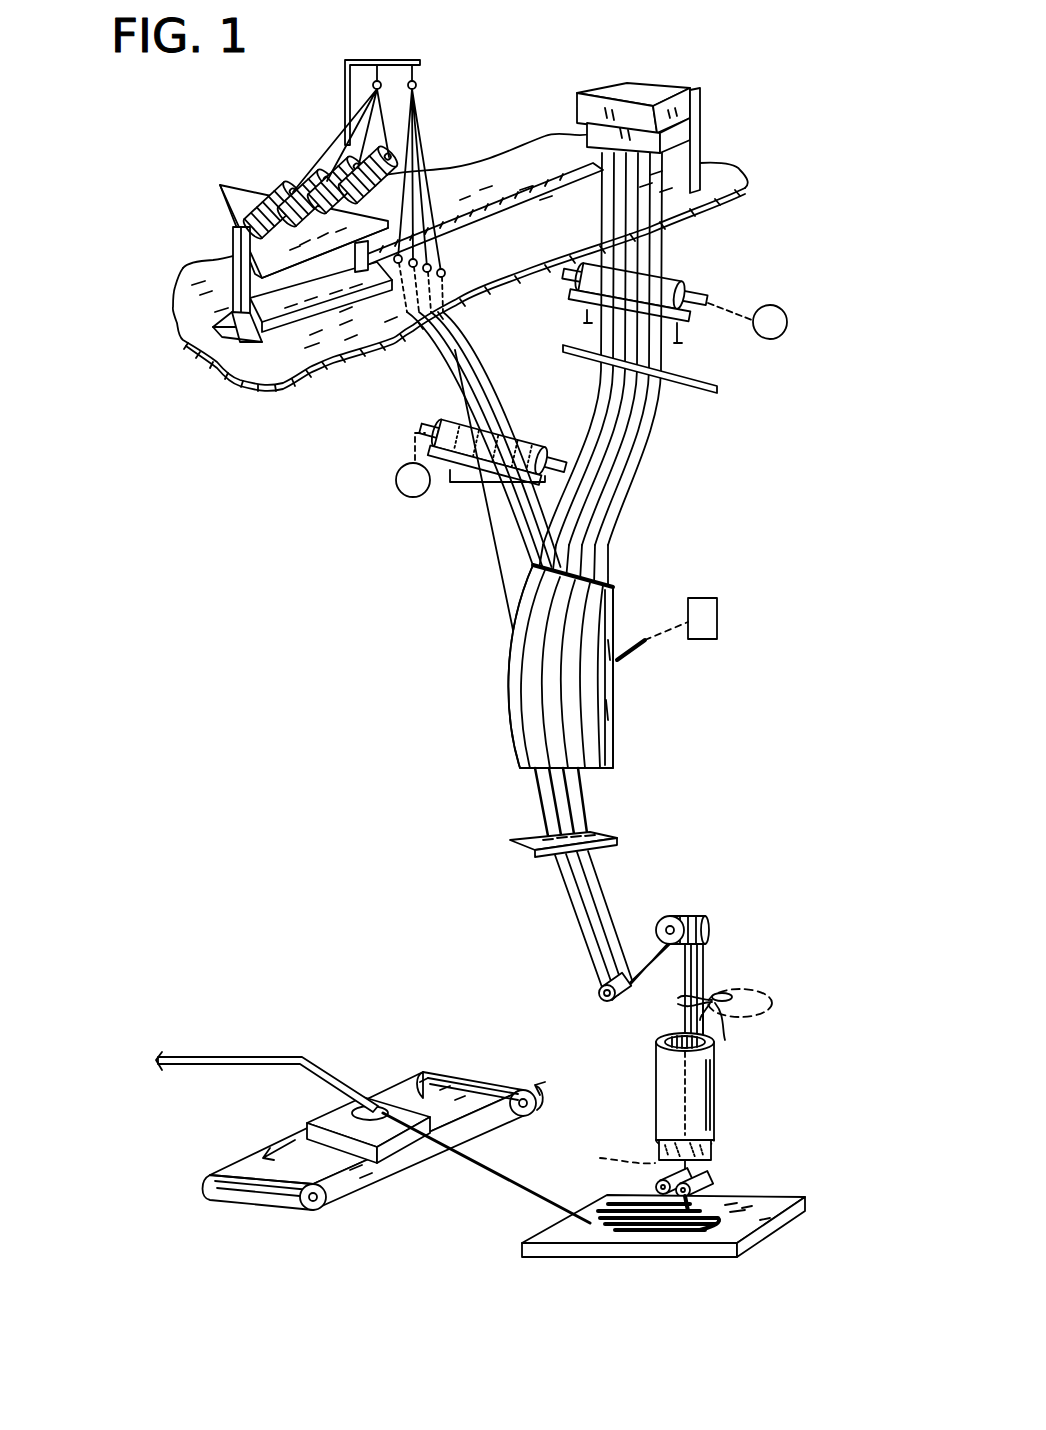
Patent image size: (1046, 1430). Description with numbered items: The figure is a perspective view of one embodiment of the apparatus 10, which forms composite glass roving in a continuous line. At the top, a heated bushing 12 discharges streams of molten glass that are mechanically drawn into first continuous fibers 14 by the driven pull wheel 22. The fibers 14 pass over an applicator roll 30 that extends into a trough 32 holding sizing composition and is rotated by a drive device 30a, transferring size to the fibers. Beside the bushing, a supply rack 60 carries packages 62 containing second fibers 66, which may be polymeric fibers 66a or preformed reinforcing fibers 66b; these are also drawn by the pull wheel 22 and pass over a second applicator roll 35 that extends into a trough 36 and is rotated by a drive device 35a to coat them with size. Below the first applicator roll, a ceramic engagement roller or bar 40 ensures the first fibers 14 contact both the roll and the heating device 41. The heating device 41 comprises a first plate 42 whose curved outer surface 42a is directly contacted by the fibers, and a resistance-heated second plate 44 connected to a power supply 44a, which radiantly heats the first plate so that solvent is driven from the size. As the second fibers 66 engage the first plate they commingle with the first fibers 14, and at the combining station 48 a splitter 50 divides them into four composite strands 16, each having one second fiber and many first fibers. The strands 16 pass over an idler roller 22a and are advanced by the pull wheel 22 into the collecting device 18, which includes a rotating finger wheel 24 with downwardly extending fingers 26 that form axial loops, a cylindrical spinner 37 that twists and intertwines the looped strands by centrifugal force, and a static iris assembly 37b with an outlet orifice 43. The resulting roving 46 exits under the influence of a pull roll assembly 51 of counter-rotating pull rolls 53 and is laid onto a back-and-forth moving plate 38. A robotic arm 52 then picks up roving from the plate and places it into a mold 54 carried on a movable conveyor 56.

The apparatus 10 is at (722, 77).
The heated bushing 12 is at (690, 138).
The first continuous fibers 14 is at (612, 475).
The composite strands 16 is at (570, 896).
The collecting device 18 is at (732, 1108).
The pull wheel 22 is at (705, 925).
The idler roller 22a is at (600, 995).
The finger wheel 24 is at (783, 1002).
The fingers 26 is at (715, 995).
The applicator roll 30 is at (680, 277).
The drive device 30a is at (787, 310).
The trough 32 is at (700, 330).
The second applicator roll 35 is at (425, 415).
The drive device 35a is at (395, 485).
The trough 36 is at (475, 470).
The spinner 37 is at (710, 1097).
The iris assembly 37b is at (645, 1143).
The plate 38 is at (693, 1239).
The engagement roller or bar 40 is at (695, 392).
The heating device 41 is at (613, 649).
The first plate 42 is at (518, 633).
The curved outer surface 42a is at (512, 706).
The outlet orifice 43 is at (611, 1159).
The second plate 44 is at (617, 590).
The power supply 44a is at (717, 620).
The roving product 46 is at (632, 1228).
The combining station 48 is at (613, 816).
The splitter 50 is at (605, 850).
The pull roll assembly 51 is at (779, 1148).
The robotic arm 52 is at (233, 1057).
The pull rolls 53 is at (710, 1185).
The mold 54 is at (398, 1105).
The conveyor 56 is at (345, 1190).
The supply rack 60 is at (248, 182).
The packages 62 is at (362, 170).
The second fibers 66 is at (477, 462).
The polymeric fibers 66a is at (462, 382).
The reinforcing fibers 66b is at (493, 403).